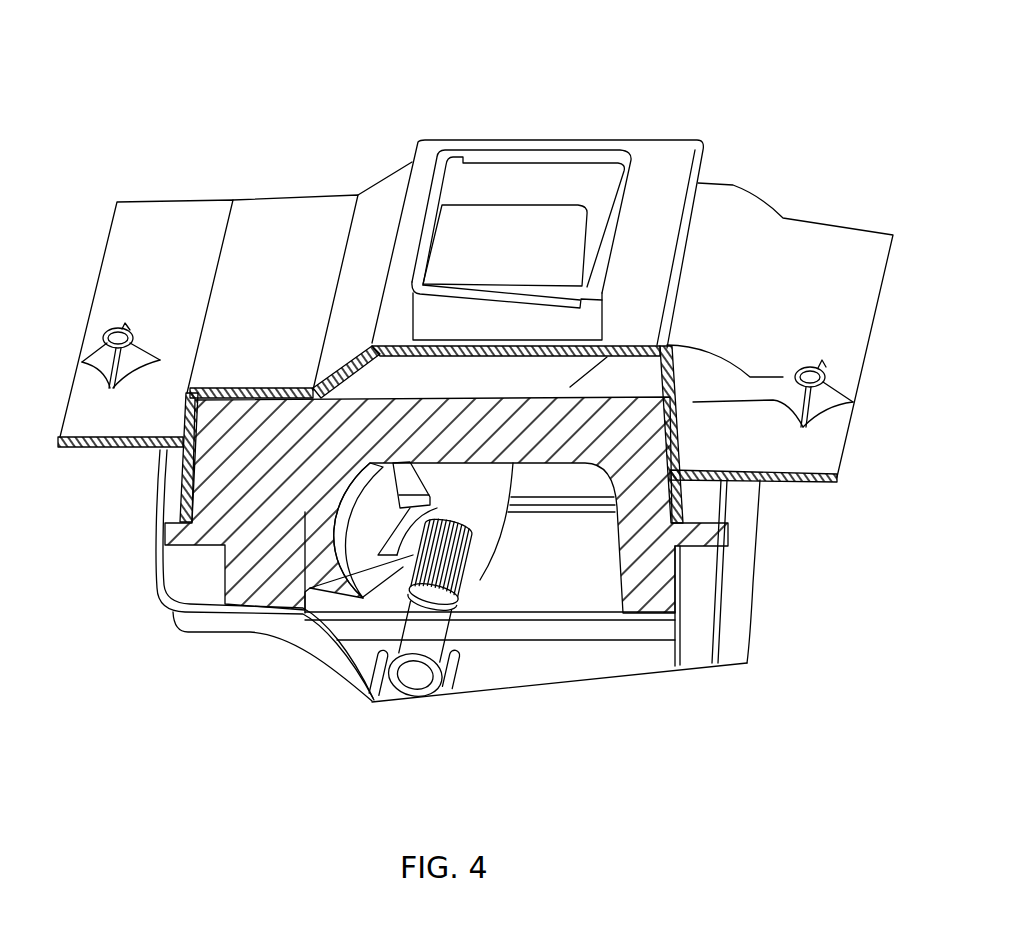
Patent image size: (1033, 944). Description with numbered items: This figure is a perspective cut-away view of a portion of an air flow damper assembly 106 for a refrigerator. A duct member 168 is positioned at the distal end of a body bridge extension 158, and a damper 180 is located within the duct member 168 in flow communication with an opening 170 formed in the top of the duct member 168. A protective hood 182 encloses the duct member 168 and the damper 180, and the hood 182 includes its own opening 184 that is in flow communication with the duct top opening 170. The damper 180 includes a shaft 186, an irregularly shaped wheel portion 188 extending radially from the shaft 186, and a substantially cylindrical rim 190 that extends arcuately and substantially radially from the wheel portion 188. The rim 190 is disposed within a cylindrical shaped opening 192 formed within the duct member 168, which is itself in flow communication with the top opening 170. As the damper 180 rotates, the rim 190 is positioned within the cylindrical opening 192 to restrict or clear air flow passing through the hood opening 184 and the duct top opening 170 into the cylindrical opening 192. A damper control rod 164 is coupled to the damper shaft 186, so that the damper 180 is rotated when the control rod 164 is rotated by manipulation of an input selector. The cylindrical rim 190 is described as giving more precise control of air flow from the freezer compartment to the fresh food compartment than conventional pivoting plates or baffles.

The connector housing assembly 106 is at (732, 47).
The body bridge extension 158 is at (165, 617).
The damper control rod 164 is at (435, 642).
The duct member 168 is at (242, 590).
The opening 170 is at (517, 218).
The damper 180 is at (494, 546).
The protective hood 182 is at (286, 225).
The opening 184 is at (602, 180).
The shaft 186 is at (455, 583).
The wheel portion 188 is at (497, 518).
The rim 190 is at (338, 495).
The cylindrical shaped opening 192 is at (332, 535).